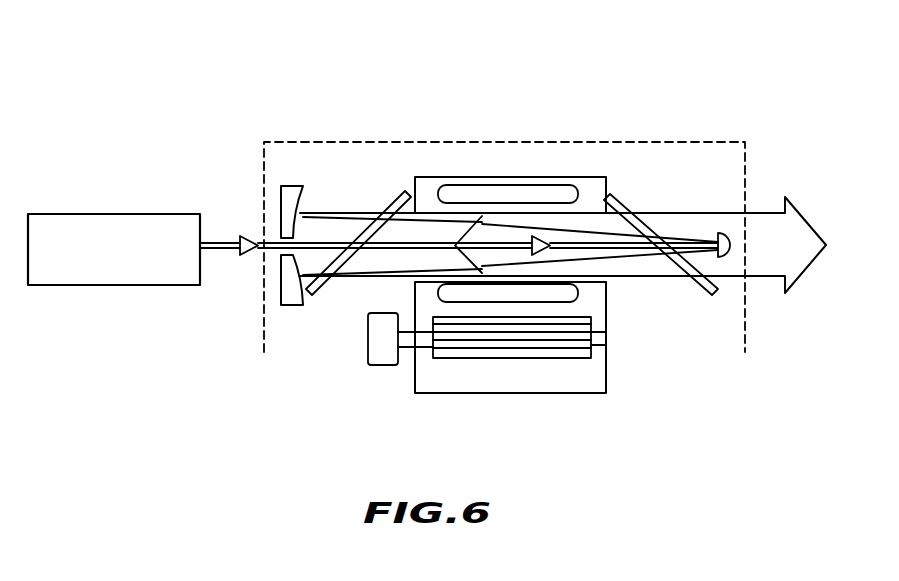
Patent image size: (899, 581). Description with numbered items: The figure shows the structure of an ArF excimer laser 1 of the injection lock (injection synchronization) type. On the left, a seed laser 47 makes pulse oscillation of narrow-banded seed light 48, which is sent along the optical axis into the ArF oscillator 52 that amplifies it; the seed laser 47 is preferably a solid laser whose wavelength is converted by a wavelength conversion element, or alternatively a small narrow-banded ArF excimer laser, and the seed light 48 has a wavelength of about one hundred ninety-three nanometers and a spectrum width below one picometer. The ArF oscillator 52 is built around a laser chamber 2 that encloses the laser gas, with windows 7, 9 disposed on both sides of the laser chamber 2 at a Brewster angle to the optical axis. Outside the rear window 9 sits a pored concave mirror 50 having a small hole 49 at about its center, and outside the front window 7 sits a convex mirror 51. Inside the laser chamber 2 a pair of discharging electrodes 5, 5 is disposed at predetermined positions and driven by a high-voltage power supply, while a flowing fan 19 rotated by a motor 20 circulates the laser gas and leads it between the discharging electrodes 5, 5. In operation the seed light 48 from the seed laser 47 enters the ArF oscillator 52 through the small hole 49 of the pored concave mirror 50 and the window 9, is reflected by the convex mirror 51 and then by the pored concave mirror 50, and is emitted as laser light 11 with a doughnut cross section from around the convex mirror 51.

The ArF excimer laser 1 is at (700, 113).
The laser chamber 2 is at (607, 376).
The discharging electrodes 5 is at (472, 190).
The window 7 is at (700, 292).
The window 9 is at (318, 293).
The laser light 11 is at (762, 212).
The flowing fan 19 is at (522, 345).
The motor 20 is at (383, 366).
The seed laser 47 is at (100, 214).
The seed light 48 is at (240, 238).
The small hole 49 is at (275, 198).
The pored concave mirror 50 is at (295, 305).
The convex mirror 51 is at (732, 258).
The ArF oscillator 52 is at (568, 140).